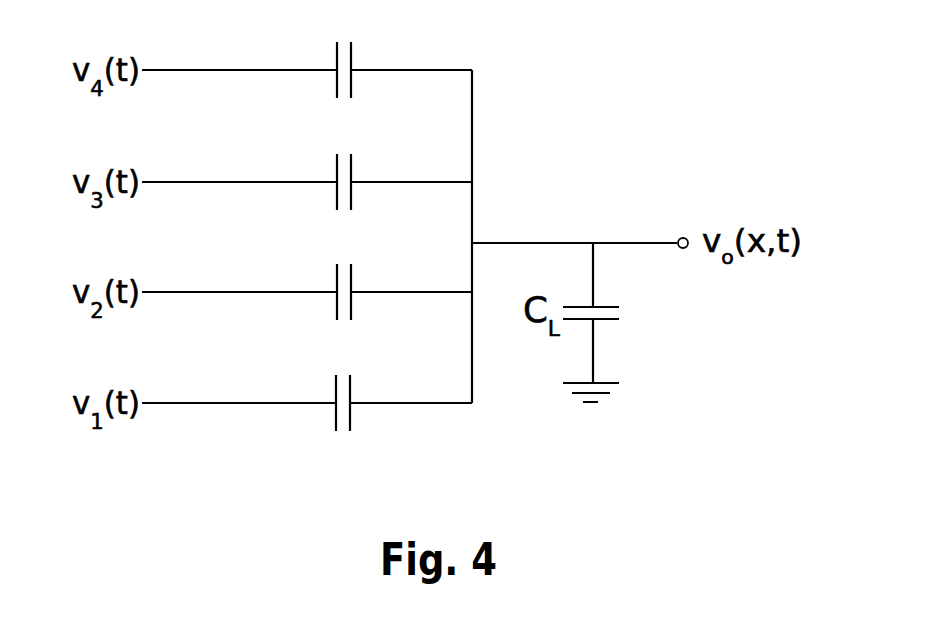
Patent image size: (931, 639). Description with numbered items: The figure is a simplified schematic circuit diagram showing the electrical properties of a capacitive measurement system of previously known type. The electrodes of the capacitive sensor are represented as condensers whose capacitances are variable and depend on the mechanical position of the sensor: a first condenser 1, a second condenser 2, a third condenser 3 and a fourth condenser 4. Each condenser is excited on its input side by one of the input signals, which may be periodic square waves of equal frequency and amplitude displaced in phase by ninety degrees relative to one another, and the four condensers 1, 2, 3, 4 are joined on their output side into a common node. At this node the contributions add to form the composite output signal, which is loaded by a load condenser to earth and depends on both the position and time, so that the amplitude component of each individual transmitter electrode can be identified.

The condenser C4(x) 4 is at (339, 94).
The condenser C3(x) 3 is at (339, 206).
The condenser C2(x) 2 is at (339, 317).
The condenser C1(x) 1 is at (339, 429).